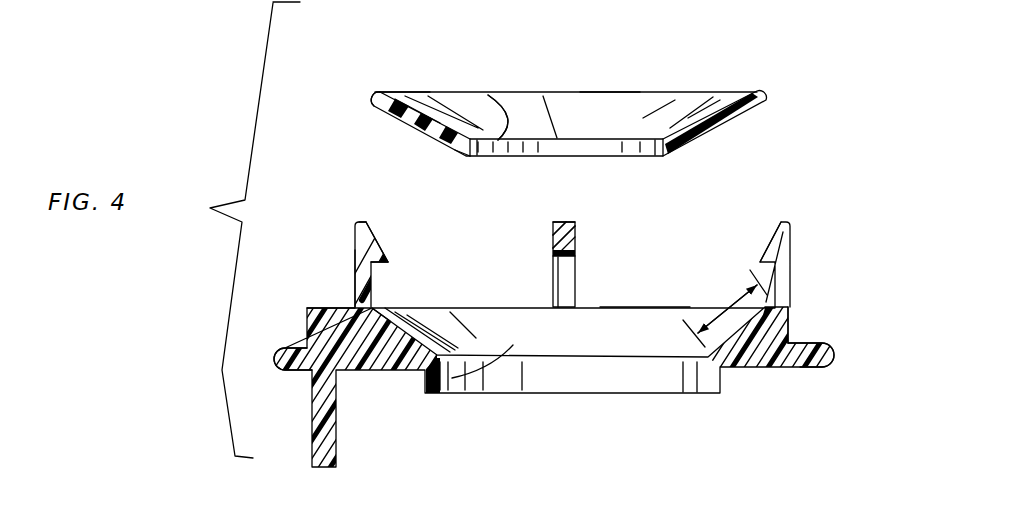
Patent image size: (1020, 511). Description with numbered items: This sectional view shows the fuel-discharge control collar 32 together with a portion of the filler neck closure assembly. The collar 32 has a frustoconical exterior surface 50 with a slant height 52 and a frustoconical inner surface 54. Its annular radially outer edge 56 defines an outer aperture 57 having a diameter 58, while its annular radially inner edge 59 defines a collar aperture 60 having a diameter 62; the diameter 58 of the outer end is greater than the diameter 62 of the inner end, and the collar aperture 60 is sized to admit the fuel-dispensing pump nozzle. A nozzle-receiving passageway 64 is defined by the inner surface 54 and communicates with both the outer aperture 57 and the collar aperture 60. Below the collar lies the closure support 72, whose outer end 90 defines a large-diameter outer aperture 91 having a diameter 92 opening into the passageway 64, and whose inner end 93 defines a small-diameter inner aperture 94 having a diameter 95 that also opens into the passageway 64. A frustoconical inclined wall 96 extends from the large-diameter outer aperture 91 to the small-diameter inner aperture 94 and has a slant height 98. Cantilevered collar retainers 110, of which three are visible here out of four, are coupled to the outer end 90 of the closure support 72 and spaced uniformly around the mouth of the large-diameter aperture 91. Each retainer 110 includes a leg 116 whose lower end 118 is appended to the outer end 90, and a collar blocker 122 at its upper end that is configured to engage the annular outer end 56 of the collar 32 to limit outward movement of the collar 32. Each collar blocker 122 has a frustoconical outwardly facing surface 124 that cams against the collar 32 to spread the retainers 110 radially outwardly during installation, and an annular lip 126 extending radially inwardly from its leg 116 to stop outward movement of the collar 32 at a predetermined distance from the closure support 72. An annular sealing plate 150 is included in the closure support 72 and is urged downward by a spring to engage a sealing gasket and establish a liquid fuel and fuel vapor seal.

The fuel-discharge control collar 32 is at (782, 87).
The frustoconical exterior surface 50 is at (416, 130).
The slant height 52 is at (760, 97).
The frustoconical inner surface 54 is at (688, 118).
The annular radially outer edge 56 is at (373, 91).
The outer aperture 57 is at (391, 92).
The diameter 58 is at (748, 38).
The annular radially inner edge 59 is at (467, 154).
The collar aperture 60 is at (500, 138).
The diameter 62 is at (470, 168).
The nozzle-receiving passageway 64 is at (598, 122).
The closure support 72 is at (816, 314).
The outer end 90 is at (785, 315).
The large-diameter outer aperture 91 is at (378, 310).
The diameter 92 is at (775, 268).
The inner end 93 is at (430, 381).
The small-diameter inner aperture 94 is at (528, 345).
The diameter 95 is at (437, 405).
The frustoconical inclined wall 96 is at (421, 316).
The slant height 98 is at (712, 325).
The cantilevered collar retainer 110 is at (350, 224).
The leg 116 is at (356, 262).
The lower end 118 is at (356, 303).
The collar blocker 122 is at (391, 241).
The frustoconical outwardly facing surface 124 is at (378, 247).
The annular lip 126 is at (362, 268).
The annular sealing plate 150 is at (281, 362).